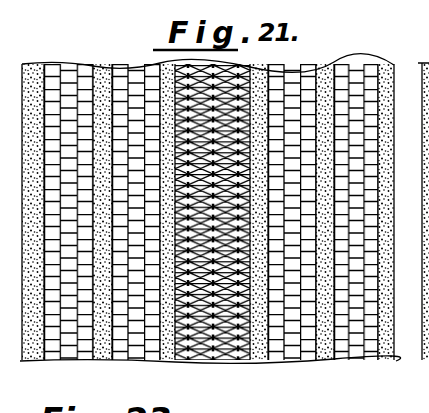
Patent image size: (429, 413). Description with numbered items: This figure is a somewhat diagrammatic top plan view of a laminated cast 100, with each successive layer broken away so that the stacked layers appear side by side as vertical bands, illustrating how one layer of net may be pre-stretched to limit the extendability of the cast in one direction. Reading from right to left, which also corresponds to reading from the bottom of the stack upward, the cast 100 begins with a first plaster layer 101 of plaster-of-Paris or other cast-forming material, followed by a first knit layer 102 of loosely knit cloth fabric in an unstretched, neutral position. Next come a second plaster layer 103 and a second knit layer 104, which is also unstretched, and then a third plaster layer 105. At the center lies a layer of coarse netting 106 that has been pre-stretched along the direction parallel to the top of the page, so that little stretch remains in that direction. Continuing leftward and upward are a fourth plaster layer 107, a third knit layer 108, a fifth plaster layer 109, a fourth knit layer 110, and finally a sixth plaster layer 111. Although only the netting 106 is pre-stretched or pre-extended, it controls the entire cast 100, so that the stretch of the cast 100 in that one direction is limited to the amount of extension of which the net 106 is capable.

The cast 100 is at (250, 368).
The first plaster layer 101 is at (390, 362).
The first knit layer 102 is at (358, 362).
The second plaster layer 103 is at (321, 362).
The second knit layer 104 is at (299, 362).
The third plaster layer 105 is at (259, 362).
The netting layer 106 is at (214, 362).
The fourth plaster layer 107 is at (168, 362).
The third knit layer 108 is at (134, 362).
The fifth plaster layer 109 is at (101, 362).
The fourth knit layer 110 is at (65, 362).
The sixth plaster layer 111 is at (33, 362).